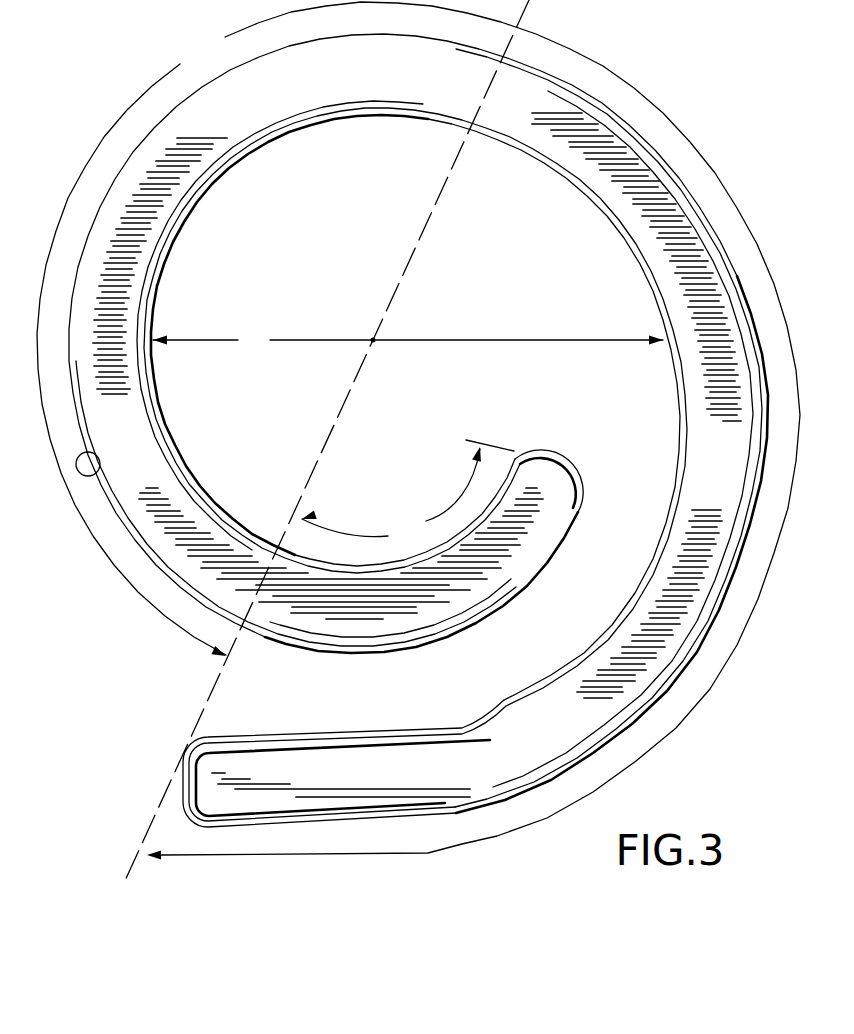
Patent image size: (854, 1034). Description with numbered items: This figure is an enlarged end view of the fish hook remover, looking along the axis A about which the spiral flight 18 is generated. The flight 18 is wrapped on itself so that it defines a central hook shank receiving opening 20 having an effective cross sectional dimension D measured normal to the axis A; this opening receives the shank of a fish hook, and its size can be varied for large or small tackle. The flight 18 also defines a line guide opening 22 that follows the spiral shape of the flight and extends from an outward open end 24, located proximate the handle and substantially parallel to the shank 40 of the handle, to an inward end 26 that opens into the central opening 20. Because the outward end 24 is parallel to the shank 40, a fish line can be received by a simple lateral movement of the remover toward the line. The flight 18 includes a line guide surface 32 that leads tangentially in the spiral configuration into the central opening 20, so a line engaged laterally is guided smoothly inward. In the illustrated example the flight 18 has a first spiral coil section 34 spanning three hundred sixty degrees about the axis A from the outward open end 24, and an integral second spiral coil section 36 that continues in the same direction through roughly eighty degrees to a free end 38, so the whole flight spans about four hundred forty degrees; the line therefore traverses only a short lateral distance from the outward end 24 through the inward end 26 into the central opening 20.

The spiral flight 18 is at (576, 203).
The central hook shank receiving opening 20 is at (279, 256).
The line guide opening 22 is at (262, 704).
The outward open end 24 is at (219, 679).
The inward end 26 is at (630, 478).
The line guide surface 32 is at (100, 474).
The first spiral coil section 34 is at (418, 431).
The second spiral coil section 36 is at (408, 492).
The free end 38 is at (553, 455).
The shank 40 is at (303, 773).
The effective cross sectional dimension D is at (408, 342).
The axis A is at (377, 347).